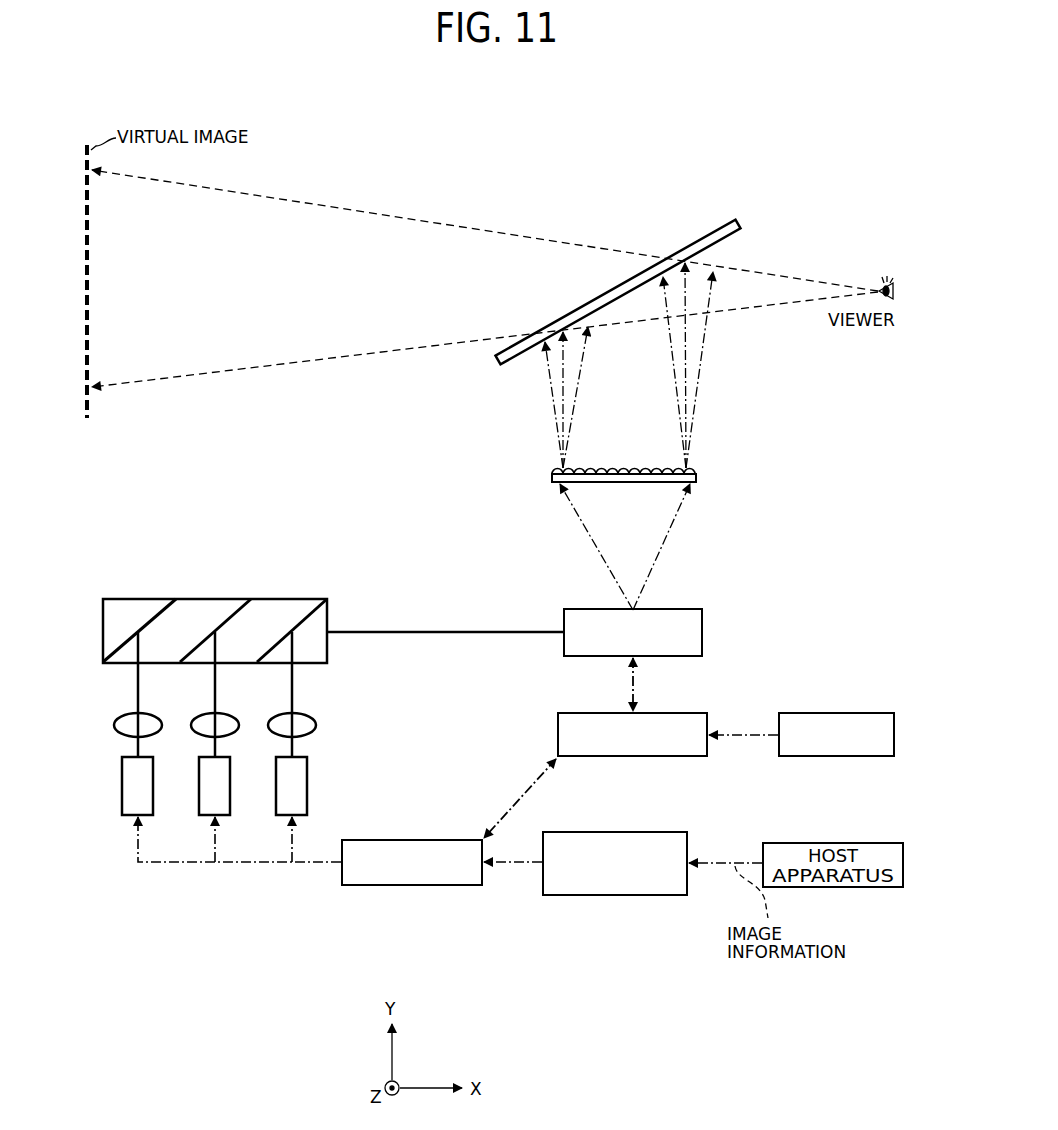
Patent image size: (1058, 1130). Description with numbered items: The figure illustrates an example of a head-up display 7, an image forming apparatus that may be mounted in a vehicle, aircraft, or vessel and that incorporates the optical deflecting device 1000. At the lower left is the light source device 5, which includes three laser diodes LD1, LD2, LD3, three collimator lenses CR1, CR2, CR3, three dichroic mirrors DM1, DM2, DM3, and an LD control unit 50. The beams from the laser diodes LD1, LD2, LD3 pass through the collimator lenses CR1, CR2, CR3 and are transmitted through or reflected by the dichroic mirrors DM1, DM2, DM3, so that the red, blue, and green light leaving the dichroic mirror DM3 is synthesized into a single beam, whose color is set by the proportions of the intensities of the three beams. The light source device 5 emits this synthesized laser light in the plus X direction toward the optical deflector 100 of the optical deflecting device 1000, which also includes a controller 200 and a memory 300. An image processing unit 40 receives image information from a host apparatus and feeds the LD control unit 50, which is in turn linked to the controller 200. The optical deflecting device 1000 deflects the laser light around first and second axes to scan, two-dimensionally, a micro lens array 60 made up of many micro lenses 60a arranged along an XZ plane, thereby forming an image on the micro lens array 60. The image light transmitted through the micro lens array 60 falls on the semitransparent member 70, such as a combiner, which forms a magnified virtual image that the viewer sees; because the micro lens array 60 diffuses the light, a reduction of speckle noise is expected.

The head-up display 7 is at (808, 115).
The semitransparent member 70 is at (712, 232).
The micro lens array 60 is at (697, 482).
The micro lenses 60a is at (697, 468).
The optical deflector 100 is at (703, 626).
The optical deflecting device 1000 is at (796, 603).
The controller 200 is at (657, 758).
The memory 300 is at (862, 758).
The LD control unit 50 is at (448, 887).
The image processing unit 40 is at (645, 897).
The light source device 5 is at (140, 880).
The dichroic mirror DM1 is at (147, 613).
The dichroic mirror DM2 is at (223, 613).
The dichroic mirror DM3 is at (300, 613).
The collimator lens CR1 is at (126, 719).
The collimator lens CR2 is at (203, 719).
The collimator lens CR3 is at (280, 719).
The laser diode LD1 is at (127, 816).
The laser diode LD2 is at (204, 816).
The laser diode LD3 is at (281, 816).